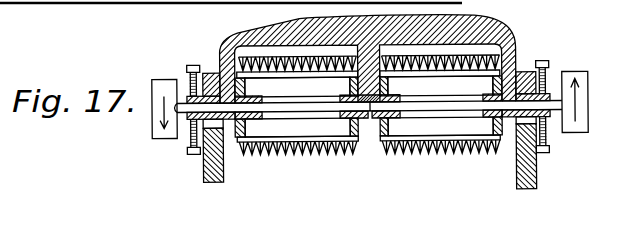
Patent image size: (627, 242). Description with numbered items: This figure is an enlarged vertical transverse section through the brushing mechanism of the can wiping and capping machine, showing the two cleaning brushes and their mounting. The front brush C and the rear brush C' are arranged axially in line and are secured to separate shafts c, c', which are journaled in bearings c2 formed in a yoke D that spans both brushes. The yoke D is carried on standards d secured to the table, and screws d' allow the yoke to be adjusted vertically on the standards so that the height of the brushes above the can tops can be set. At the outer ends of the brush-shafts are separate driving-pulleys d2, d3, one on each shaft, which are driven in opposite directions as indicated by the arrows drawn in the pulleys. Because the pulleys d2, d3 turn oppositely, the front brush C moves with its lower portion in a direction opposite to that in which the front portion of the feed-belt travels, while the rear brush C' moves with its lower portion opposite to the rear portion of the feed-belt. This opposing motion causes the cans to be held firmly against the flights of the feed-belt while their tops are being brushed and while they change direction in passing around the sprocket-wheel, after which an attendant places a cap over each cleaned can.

The yoke D is at (492, 21).
The standards d is at (375, 137).
The screws d' is at (376, 110).
The driving-pulley d2 is at (154, 138).
The driving-pulley d3 is at (589, 134).
The shaft c is at (318, 99).
The shaft c' is at (437, 98).
The bearings c2 is at (233, 122).
The front brush C is at (298, 121).
The rear brush C' is at (441, 119).